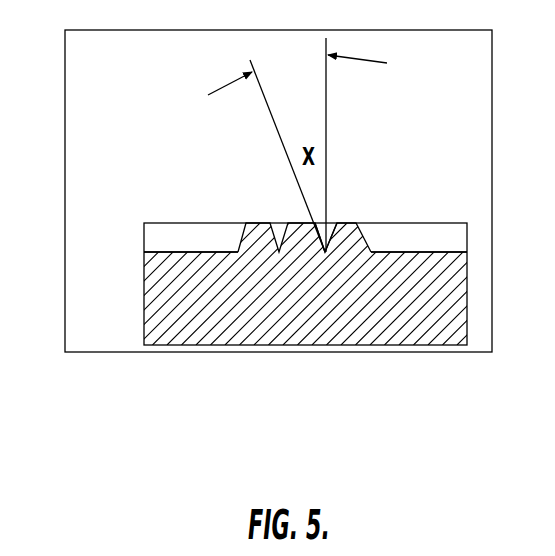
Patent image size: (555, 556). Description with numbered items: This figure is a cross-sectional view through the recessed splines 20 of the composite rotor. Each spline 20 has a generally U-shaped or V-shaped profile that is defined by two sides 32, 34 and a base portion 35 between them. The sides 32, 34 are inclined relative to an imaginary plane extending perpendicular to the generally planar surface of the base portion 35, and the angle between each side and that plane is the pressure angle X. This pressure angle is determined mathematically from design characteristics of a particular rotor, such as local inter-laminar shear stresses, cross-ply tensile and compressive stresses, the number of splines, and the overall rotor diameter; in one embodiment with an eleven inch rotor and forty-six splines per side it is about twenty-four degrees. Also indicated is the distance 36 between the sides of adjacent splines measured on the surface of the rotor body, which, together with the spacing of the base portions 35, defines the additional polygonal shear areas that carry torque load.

The recessed splines 20 is at (234, 201).
The side 32 is at (362, 235).
The side 34 is at (366, 236).
The base portion 35 is at (319, 243).
The distance between the sides of adjacent splines 36 is at (352, 222).